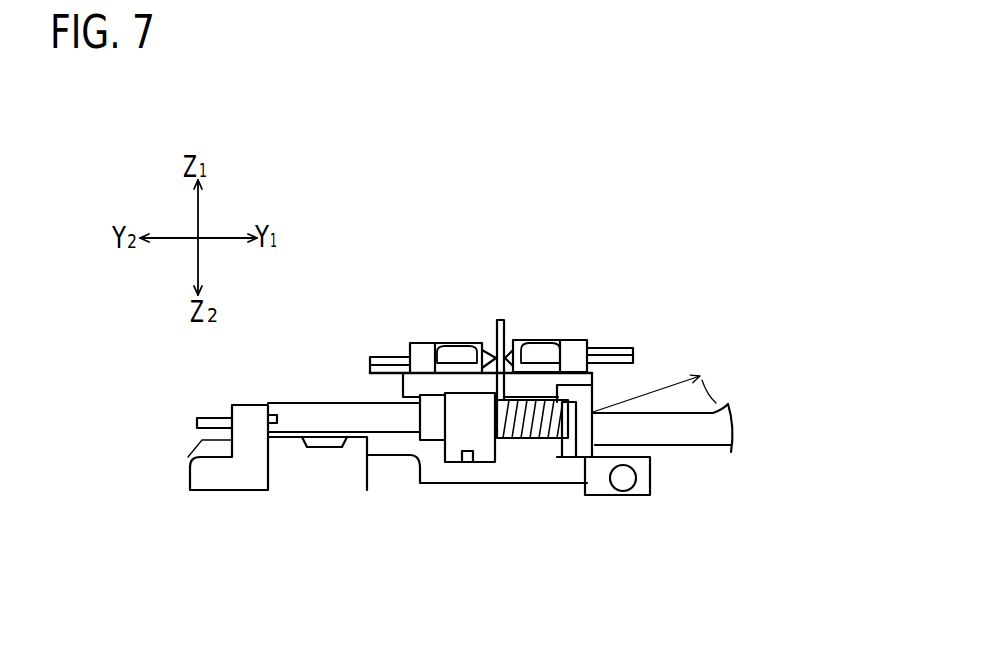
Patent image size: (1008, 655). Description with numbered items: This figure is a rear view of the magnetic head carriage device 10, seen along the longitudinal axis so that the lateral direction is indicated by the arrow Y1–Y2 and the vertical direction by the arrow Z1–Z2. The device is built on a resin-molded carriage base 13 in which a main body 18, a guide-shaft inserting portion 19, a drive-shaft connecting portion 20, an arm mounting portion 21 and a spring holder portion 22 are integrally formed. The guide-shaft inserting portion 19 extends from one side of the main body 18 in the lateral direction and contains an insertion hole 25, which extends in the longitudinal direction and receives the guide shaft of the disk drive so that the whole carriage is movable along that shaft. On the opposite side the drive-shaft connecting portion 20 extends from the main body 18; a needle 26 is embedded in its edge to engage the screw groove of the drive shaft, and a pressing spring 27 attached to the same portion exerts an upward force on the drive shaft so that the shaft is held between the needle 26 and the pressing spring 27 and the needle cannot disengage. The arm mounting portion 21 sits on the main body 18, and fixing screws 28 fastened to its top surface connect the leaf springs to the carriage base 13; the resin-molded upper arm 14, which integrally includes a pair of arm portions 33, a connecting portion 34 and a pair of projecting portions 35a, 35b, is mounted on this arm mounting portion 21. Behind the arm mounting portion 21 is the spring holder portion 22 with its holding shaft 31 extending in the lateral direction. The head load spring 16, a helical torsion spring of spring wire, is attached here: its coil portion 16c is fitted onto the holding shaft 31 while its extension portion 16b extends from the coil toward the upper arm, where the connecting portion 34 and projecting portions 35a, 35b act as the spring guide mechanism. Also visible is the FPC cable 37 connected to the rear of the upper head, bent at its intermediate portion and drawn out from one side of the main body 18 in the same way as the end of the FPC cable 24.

The magnetic head carriage device 10 is at (320, 163).
The carriage base 13 is at (424, 493).
The upper arm 14 is at (601, 331).
The head load spring 16 is at (539, 452).
The extension portion 16b is at (501, 320).
The coil portion 16c is at (518, 443).
The main body 18 is at (498, 470).
The guide-shaft inserting portion 19 is at (597, 485).
The drive-shaft connecting portion 20 is at (178, 413).
The arm mounting portion 21 is at (398, 388).
The spring holder portion 22 is at (466, 430).
The FPC cable 24 is at (697, 432).
The insertion hole 25 is at (619, 477).
The needle 26 is at (213, 420).
The pressing spring 27 is at (195, 446).
The fixing screws 28 is at (460, 345).
The holding shaft 31 is at (577, 416).
The arm portions 33 is at (385, 357).
The connecting portion 34 is at (510, 352).
The projecting portion 35a is at (428, 345).
The projecting portion 35b is at (568, 338).
The FPC cable 37 is at (700, 376).